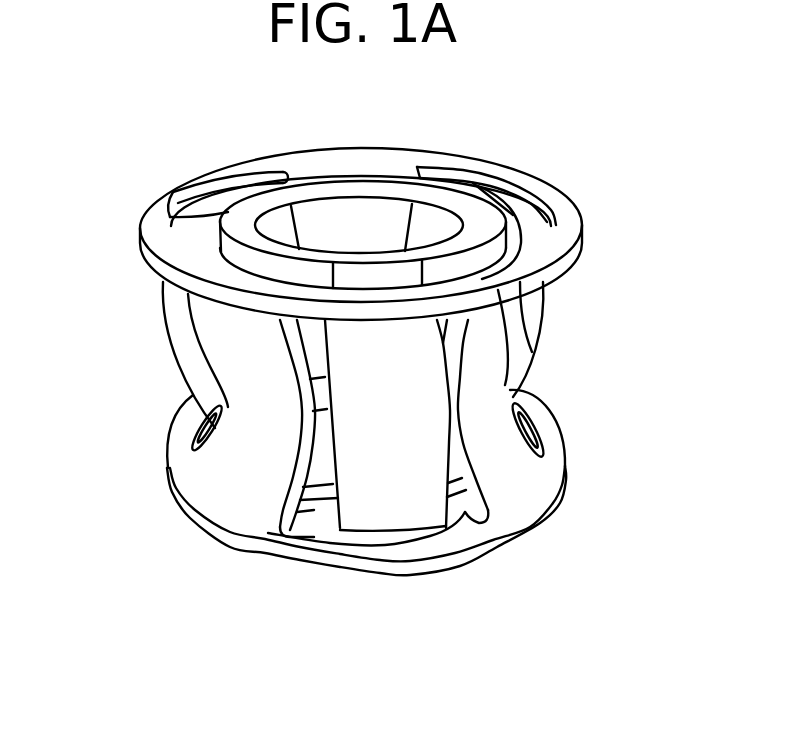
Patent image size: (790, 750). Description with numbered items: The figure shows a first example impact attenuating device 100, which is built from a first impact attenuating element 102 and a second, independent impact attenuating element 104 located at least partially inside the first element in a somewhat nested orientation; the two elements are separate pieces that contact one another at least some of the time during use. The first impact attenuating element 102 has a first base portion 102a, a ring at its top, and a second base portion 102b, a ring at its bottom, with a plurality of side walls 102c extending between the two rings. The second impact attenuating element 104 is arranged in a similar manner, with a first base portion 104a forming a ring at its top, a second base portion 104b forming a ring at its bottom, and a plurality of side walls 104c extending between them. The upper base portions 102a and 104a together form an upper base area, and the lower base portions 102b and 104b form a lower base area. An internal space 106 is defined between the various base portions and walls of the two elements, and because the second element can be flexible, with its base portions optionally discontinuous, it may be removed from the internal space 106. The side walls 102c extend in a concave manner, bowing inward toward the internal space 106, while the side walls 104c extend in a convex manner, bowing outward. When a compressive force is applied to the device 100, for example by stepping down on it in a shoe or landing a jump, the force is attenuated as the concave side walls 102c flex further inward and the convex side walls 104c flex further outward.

The impact attenuating device 100 is at (430, 133).
The first impact attenuating element 102 is at (557, 231).
The first base portion 102a is at (490, 172).
The second base portion 102b is at (490, 545).
The side walls 102c is at (320, 217).
The second impact attenuating element 104 is at (534, 350).
The first base portion 104a is at (240, 222).
The second base portion 104b is at (318, 508).
The side walls 104c is at (532, 317).
The internal space 106 is at (338, 214).